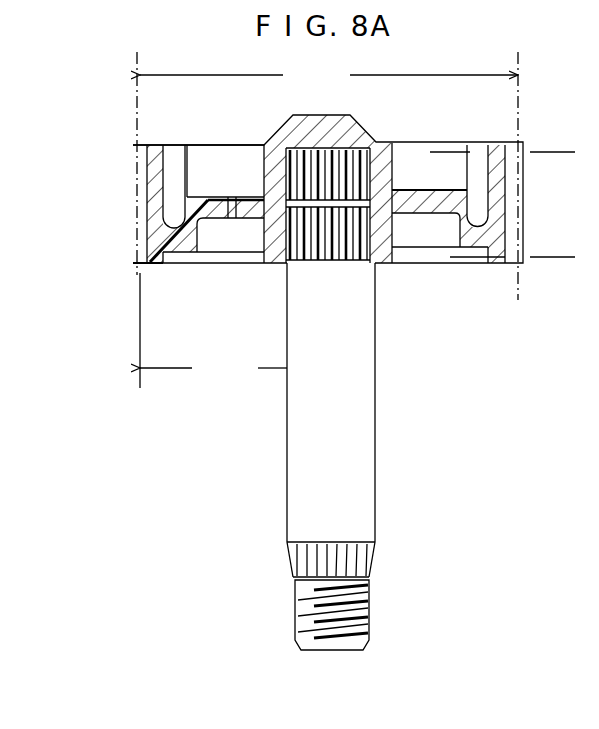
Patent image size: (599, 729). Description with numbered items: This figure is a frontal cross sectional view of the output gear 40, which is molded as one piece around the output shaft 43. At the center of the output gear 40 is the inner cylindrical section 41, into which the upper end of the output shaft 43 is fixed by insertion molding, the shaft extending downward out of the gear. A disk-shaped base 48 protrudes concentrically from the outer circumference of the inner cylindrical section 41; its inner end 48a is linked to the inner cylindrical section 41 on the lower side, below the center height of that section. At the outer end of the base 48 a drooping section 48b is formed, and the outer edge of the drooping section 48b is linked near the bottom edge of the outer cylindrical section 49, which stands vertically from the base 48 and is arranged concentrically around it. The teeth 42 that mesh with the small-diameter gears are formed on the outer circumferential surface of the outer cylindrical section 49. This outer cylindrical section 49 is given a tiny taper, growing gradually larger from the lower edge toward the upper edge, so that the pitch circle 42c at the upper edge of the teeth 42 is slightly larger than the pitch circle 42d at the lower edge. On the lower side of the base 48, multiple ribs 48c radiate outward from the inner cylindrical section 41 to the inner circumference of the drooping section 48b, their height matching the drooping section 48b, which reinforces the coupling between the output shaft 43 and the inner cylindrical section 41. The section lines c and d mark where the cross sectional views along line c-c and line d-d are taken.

The output gear 40 is at (178, 143).
The inner cylindrical section 41 is at (262, 262).
The teeth 42 is at (133, 226).
The pitch circle on the upper edge of the teeth 42c is at (329, 79).
The pitch circle on the lower edge of the teeth 42d is at (213, 330).
The output shaft 43 is at (376, 426).
The base 48 is at (428, 178).
The inner end of the base 48a is at (408, 192).
The drooping section 48b is at (178, 262).
The ribs 48c is at (411, 237).
The outer cylindrical section 49 is at (160, 268).
The line c- c is at (448, 150).
The line d- d is at (449, 258).